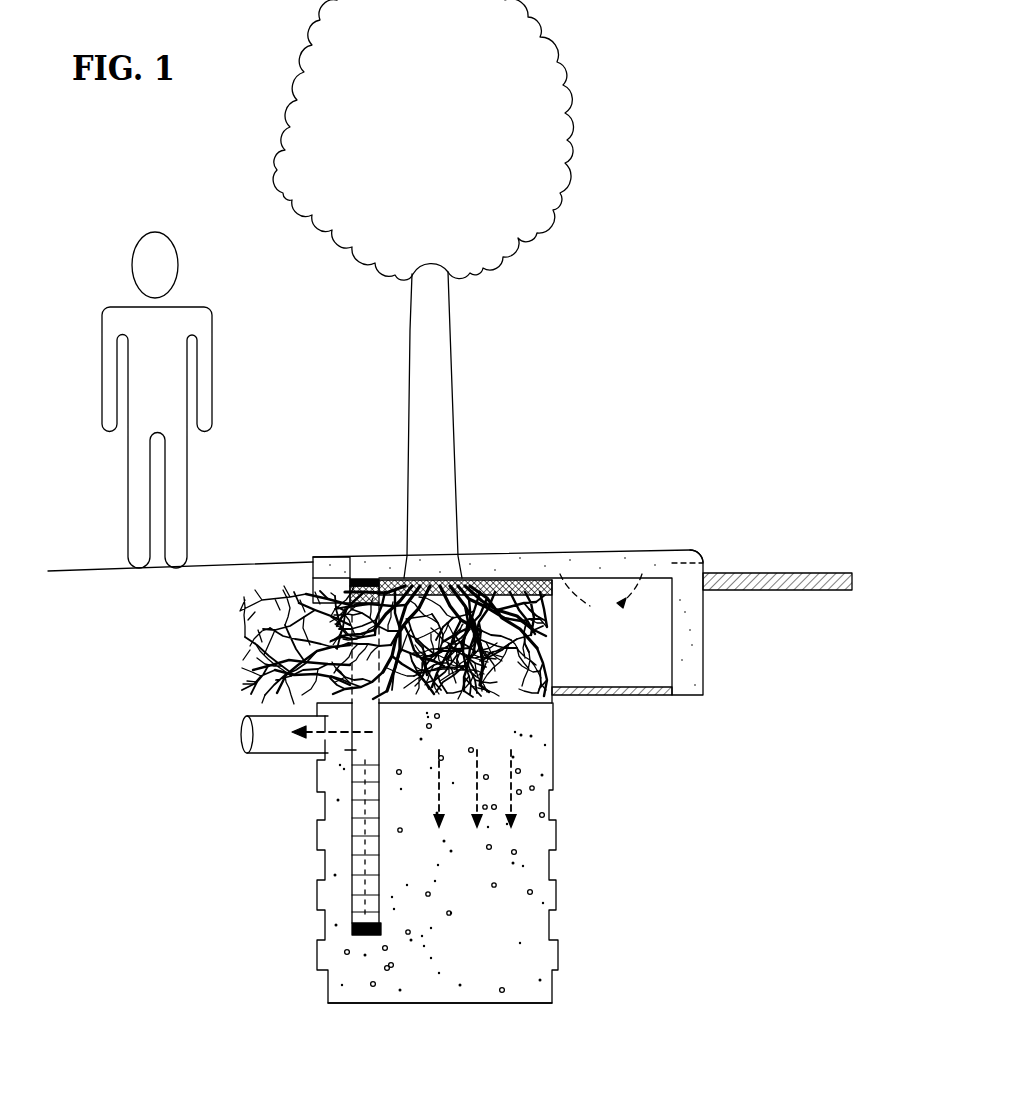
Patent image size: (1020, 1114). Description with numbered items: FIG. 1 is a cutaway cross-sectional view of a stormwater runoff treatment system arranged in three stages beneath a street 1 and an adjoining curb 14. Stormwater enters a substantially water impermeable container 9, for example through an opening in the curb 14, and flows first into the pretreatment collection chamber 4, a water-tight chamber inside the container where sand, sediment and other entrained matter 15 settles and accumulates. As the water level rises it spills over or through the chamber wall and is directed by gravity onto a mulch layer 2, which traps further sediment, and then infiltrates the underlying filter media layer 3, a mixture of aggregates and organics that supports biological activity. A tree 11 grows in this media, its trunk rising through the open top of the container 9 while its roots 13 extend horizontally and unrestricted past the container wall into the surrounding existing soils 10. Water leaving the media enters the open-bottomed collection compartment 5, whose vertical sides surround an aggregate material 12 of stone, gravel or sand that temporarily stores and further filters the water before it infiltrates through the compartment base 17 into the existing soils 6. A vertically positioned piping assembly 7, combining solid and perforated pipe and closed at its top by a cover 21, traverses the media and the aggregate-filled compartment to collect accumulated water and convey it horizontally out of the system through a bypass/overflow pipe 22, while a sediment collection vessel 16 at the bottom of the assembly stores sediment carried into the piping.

The street 1 is at (812, 573).
The mulch layer 2 is at (500, 580).
The filter media layer 3 is at (505, 645).
The pretreatment collection chamber 4 is at (650, 636).
The open-bottomed collection compartment 5 is at (554, 826).
The existing soils 6 is at (223, 945).
The vertically positioned piping assembly 7 is at (367, 815).
The substantially water impermeable container 9 is at (333, 578).
The surrounding existing soils 10 is at (232, 688).
The tree 11 is at (410, 422).
The aggregate material 12 is at (497, 888).
The roots 13 is at (243, 607).
The curb 14 is at (713, 557).
The accumulated entrained material 15 is at (652, 694).
The sediment collection vessel 16 is at (362, 937).
The base of the compartment 17 is at (452, 1012).
The cover 21 is at (363, 575).
The bypass/overflow pipe 22 is at (240, 739).